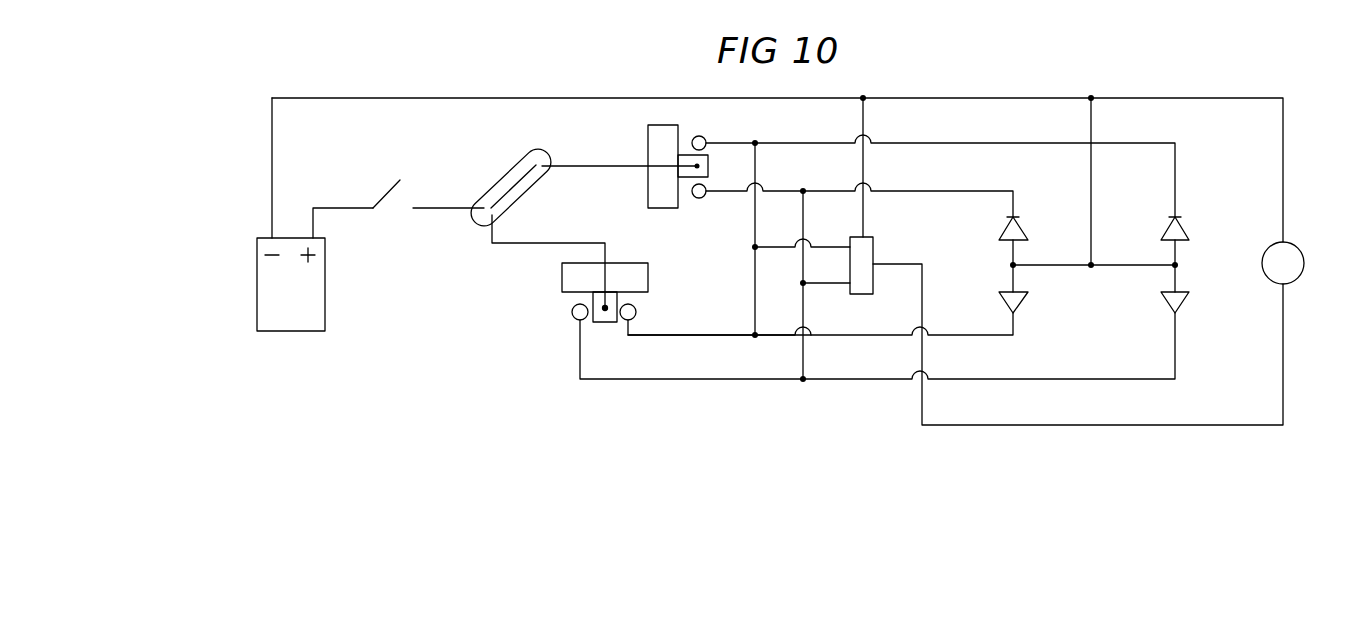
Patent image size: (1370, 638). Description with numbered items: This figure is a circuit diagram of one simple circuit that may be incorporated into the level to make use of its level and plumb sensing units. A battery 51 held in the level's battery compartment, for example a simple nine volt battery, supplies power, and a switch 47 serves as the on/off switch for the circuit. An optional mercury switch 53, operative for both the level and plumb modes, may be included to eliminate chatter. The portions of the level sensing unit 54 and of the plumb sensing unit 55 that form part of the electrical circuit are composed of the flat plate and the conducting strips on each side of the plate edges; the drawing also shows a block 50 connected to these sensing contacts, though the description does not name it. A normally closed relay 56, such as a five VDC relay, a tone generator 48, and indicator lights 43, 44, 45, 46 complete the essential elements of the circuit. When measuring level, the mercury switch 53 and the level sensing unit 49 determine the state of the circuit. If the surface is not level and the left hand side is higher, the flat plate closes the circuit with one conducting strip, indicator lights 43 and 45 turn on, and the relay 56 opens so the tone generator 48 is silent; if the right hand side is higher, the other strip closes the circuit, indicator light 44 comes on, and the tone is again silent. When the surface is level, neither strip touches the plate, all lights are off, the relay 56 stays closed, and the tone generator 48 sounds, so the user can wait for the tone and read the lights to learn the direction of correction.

The indicator light 43 is at (1018, 298).
The indicator light 44 is at (1020, 230).
The indicator light 45 is at (1172, 230).
The indicator light 46 is at (1167, 300).
The switch 47 is at (388, 190).
The tone generator 48 is at (1288, 260).
The level sensing unit 49 is at (567, 277).
The relay coil 50 is at (655, 140).
The battery 51 is at (273, 313).
The mercury switch 53 is at (503, 183).
The level sensing unit portion 54 is at (685, 177).
The plumb sensing unit portion 55 is at (697, 135).
The relay 56 is at (872, 254).